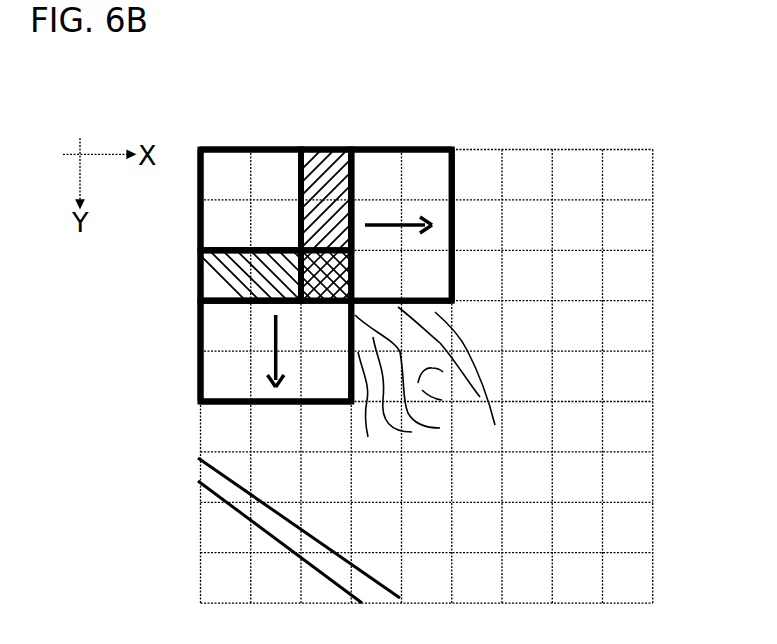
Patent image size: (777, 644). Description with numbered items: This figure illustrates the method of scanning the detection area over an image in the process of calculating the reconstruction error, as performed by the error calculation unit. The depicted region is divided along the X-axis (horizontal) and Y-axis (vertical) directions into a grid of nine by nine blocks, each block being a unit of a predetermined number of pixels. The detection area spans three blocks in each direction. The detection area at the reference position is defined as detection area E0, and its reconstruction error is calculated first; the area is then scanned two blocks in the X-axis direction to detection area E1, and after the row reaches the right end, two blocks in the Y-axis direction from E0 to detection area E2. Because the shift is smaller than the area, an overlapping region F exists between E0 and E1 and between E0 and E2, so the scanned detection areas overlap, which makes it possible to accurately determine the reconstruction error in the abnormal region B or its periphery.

The abnormal region B is at (480, 333).